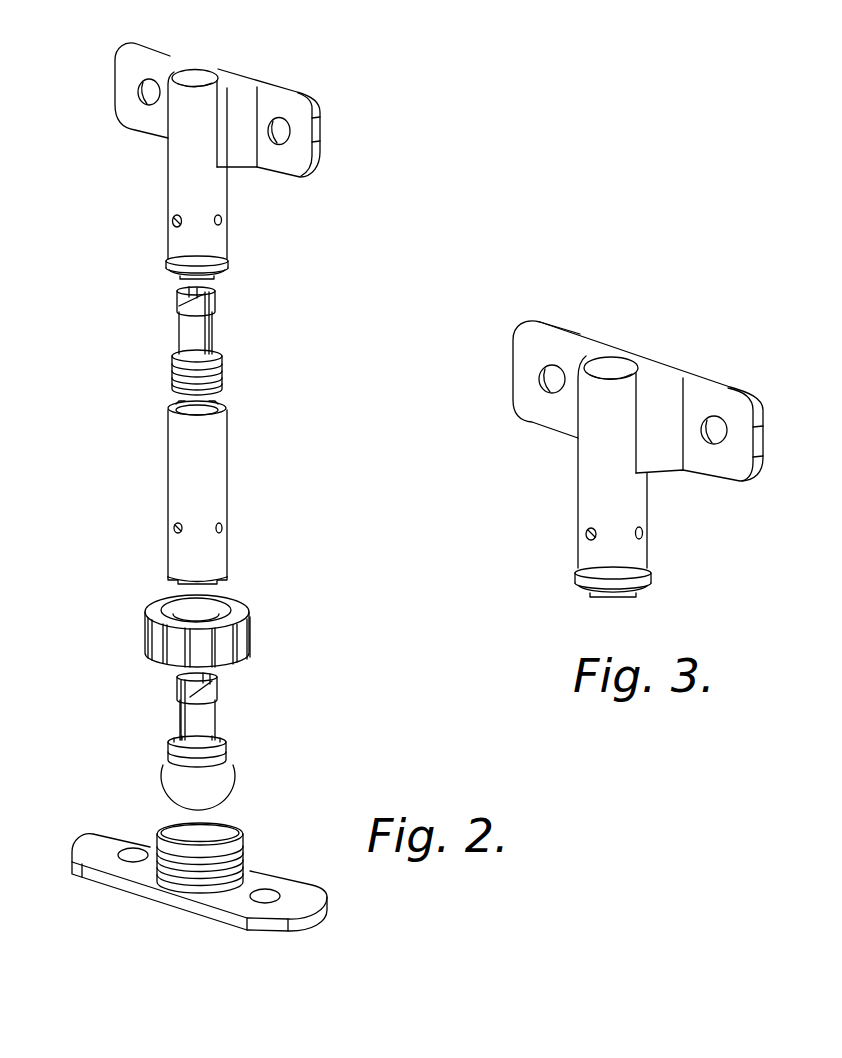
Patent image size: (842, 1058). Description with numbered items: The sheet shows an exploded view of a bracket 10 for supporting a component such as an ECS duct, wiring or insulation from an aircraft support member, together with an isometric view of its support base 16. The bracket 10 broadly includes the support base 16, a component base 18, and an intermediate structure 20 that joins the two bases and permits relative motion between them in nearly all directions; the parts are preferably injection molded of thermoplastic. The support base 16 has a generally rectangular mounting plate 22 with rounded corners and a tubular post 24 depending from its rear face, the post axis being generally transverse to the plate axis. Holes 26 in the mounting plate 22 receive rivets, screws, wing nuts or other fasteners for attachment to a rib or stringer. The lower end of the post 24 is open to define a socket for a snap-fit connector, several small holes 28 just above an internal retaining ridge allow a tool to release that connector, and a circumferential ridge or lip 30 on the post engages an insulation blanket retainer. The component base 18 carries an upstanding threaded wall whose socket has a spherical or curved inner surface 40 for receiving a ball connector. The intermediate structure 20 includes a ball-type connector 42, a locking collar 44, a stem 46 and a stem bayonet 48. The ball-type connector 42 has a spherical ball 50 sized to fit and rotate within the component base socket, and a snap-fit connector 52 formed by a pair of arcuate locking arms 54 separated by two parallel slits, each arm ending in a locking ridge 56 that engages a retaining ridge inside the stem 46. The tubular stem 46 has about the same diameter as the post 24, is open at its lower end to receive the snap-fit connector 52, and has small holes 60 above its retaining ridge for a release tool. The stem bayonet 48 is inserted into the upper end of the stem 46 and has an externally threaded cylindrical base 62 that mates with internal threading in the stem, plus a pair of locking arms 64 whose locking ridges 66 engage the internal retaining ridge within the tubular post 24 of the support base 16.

In FIG. 2, the bracket 10 is at (346, 92).
In FIG. 2, the support base 16 is at (327, 162).
In FIG. 3, the support base 16 is at (668, 333).
In FIG. 2, the component base 18 is at (81, 847).
In FIG. 2, the intermediate structure 20 is at (107, 454).
In FIG. 2, the mounting plate 22 is at (305, 137).
In FIG. 3, the mounting plate 22 is at (730, 482).
In FIG. 2, the tubular post 24 is at (175, 165).
In FIG. 3, the tubular post 24 is at (590, 472).
In FIG. 2, the holes 26 is at (139, 92).
In FIG. 3, the holes 26 is at (543, 380).
In FIG. 2, the small holes 28 is at (172, 220).
In FIG. 3, the small holes 28 is at (587, 536).
In FIG. 2, the circumferential ridge or lip 30 is at (167, 259).
In FIG. 3, the circumferential ridge or lip 30 is at (653, 580).
In FIG. 2, the curved inner surface 40 is at (221, 843).
In FIG. 2, the ball-type connector 42 is at (244, 760).
In FIG. 2, the locking collar 44 is at (257, 604).
In FIG. 2, the stem 46 is at (235, 483).
In FIG. 2, the stem bayonet 48 is at (234, 351).
In FIG. 2, the spherical ball 50 is at (170, 779).
In FIG. 2, the snap-fit connector 52 is at (166, 692).
In FIG. 2, the locking arms 54 is at (214, 718).
In FIG. 2, the locking ridge 56 is at (215, 690).
In FIG. 2, the small holes 60 is at (172, 528).
In FIG. 2, the cylindrical base 62 is at (219, 385).
In FIG. 2, the locking arms 64 is at (187, 346).
In FIG. 2, the locking ridge 66 is at (182, 303).